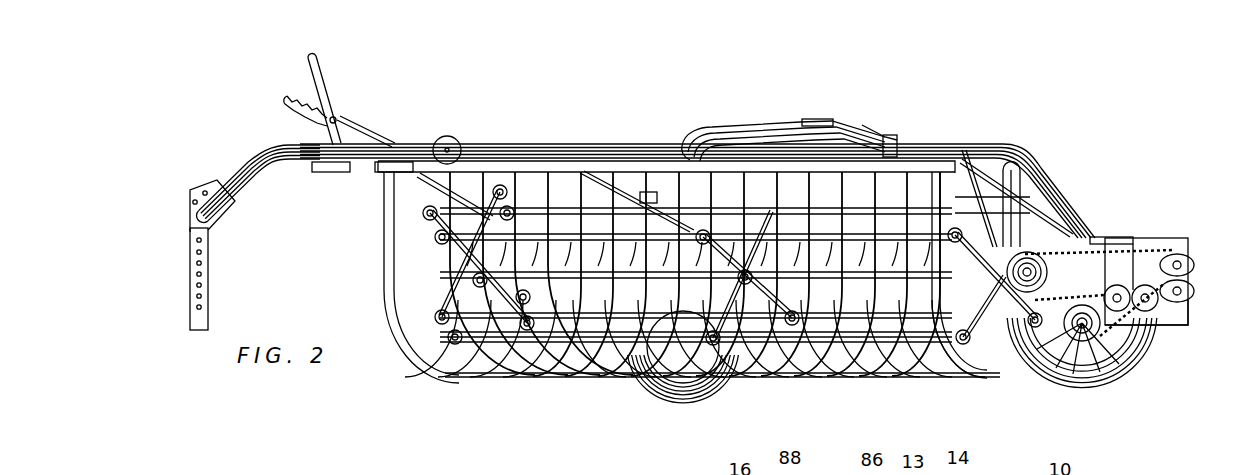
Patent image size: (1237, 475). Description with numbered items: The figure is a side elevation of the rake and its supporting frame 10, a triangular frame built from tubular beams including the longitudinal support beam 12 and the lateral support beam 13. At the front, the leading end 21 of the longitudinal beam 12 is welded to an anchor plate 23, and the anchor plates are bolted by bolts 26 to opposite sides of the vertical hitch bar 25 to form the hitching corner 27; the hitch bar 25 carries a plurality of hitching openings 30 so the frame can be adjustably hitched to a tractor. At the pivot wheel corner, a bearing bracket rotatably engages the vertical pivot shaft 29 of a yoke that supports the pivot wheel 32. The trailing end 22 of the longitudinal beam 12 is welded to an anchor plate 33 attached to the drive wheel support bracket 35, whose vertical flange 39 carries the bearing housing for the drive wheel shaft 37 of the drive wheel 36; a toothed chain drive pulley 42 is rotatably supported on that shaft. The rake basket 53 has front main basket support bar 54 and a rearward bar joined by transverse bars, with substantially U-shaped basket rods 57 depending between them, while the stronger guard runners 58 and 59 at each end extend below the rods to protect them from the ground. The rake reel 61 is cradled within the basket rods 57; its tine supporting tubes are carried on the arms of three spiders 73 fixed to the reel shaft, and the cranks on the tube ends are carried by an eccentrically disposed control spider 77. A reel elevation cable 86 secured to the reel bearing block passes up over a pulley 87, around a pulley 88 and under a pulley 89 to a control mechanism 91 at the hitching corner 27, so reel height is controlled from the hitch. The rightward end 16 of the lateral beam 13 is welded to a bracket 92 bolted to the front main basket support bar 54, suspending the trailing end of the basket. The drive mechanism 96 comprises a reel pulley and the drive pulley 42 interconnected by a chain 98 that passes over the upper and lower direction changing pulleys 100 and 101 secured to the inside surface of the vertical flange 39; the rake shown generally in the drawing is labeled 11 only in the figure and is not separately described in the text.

The support frame 10 is at (610, 147).
The frame 11 is at (397, 372).
The longitudinal support beam 12 is at (505, 146).
The lateral support beam 13 is at (778, 135).
The rightward end of the lateral beam 16 is at (878, 140).
The leading end of the longitudinal beam 21 is at (243, 185).
The trailing end of the longitudinal beam 22 is at (1060, 195).
The anchor plate 23 is at (192, 222).
The vertical hitch bar 25 is at (206, 258).
The bolts 26 is at (193, 202).
The hitching corner 27 is at (218, 165).
The vertical pivot shaft 29 is at (652, 178).
The hitching openings 30 is at (197, 297).
The pivot wheel 32 is at (653, 395).
The anchor plate 33 is at (1127, 240).
The drive wheel support bracket 35 is at (1178, 338).
The drive wheel 36 is at (1130, 390).
The drive wheel shaft 37 is at (1073, 333).
The vertical flange 39 is at (1172, 243).
The chain drive pulley 42 is at (1085, 342).
The rake basket 53 is at (553, 384).
The front main basket support bar 54 is at (558, 165).
The basket rods 57 is at (818, 370).
The guard runner 58 is at (430, 378).
The guard runner 59 is at (1017, 380).
The rake reel 61 is at (897, 345).
The spiders 73 is at (743, 340).
The control spider 77 is at (445, 300).
The reel elevation cable 86 is at (683, 140).
The pulley 87 is at (1018, 165).
The pulley 88 is at (820, 122).
The pulley 89 is at (447, 136).
The control mechanism 91 is at (338, 103).
The bracket 92 is at (893, 142).
The drive mechanism 96 is at (1140, 373).
The chain 98 is at (1107, 340).
The upper direction changing pulley 100 is at (1190, 258).
The lower direction changing pulley 101 is at (1190, 302).